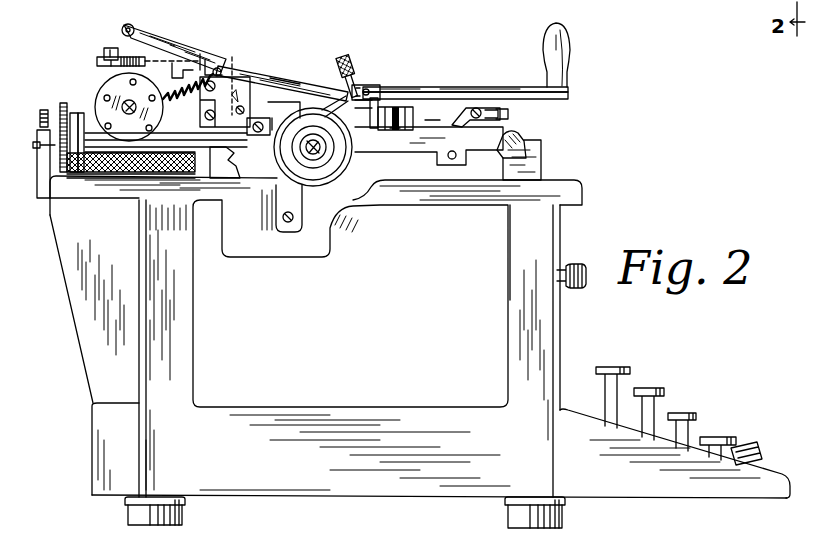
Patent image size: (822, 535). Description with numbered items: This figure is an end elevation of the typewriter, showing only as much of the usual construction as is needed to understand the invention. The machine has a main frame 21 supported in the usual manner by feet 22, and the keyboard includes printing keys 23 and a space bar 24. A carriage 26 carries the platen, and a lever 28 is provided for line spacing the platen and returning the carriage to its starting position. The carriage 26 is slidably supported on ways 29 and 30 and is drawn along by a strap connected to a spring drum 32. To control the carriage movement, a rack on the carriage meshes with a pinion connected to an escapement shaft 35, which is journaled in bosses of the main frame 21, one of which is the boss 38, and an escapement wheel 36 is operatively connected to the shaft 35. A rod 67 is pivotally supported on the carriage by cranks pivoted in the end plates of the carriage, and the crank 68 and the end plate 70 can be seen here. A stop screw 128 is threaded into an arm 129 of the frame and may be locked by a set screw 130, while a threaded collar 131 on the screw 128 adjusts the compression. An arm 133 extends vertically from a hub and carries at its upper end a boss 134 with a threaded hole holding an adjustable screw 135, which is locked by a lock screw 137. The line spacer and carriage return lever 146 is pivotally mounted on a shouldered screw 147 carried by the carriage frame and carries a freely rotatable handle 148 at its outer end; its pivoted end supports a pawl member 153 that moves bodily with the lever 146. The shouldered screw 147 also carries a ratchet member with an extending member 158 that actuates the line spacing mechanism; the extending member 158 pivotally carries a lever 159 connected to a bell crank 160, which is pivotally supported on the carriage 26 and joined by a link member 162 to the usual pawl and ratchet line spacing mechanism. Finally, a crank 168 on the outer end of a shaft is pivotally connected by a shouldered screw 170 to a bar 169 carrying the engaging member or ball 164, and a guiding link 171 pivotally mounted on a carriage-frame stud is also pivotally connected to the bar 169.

The main frame 21 is at (202, 299).
The feet 22 is at (185, 517).
The printing keys 23 is at (648, 388).
The space bar 24 is at (745, 447).
The carriage 26 is at (476, 142).
The lever 28 is at (576, 96).
The way 29 is at (527, 134).
The way 30 is at (238, 172).
The spring drum 32 is at (107, 168).
The escapement shaft 35 is at (86, 128).
The escapement wheel 36 is at (70, 112).
The boss 38 is at (80, 112).
The rod 67 is at (237, 72).
The crank 68 is at (247, 78).
The end plate 70 is at (150, 35).
The stop screw 128 is at (60, 105).
The arm 129 is at (44, 198).
The set screw 130 is at (42, 120).
The threaded collar 131 is at (36, 149).
The arm 133 is at (110, 66).
The boss 134 is at (105, 48).
The adjustable screw 135 is at (174, 72).
The lock screw 137 is at (110, 50).
The line spacer and carriage return lever 146 is at (462, 86).
The shouldered screw 147 is at (368, 84).
The handle 148 is at (575, 36).
The pawl member 153 is at (396, 104).
The extending member 158 is at (394, 130).
The lever 159 is at (433, 123).
The bell crank 160 is at (470, 107).
The link member 162 is at (504, 112).
The engaging member or ball 164 is at (350, 82).
The crank 168 is at (218, 72).
The bar 169 is at (283, 80).
The shouldered screw 170 is at (228, 57).
The guiding link 171 is at (334, 138).